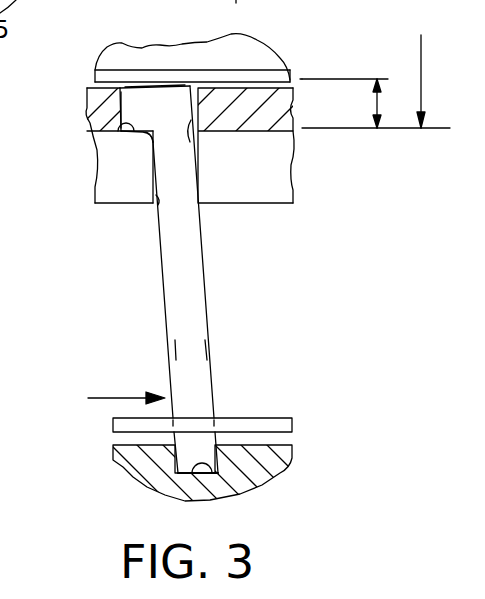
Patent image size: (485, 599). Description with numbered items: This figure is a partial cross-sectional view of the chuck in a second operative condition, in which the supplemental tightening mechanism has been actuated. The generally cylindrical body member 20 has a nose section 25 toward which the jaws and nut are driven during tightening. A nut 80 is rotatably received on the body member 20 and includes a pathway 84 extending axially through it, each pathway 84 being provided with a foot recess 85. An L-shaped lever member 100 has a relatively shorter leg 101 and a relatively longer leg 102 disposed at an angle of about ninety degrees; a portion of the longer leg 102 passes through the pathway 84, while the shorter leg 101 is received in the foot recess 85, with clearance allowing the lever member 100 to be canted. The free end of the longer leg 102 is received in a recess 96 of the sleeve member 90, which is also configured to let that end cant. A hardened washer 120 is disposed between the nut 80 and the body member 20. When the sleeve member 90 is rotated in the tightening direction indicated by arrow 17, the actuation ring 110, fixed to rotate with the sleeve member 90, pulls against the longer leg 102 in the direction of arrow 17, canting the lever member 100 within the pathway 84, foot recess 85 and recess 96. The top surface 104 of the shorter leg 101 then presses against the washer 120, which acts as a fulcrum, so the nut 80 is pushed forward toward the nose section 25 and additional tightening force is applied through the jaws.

The arrow indicating tightening direction 17 is at (115, 398).
The body member 20 is at (263, 44).
The nose section 25 is at (77, 22).
The nut 80 is at (278, 182).
The pathway 84 is at (190, 130).
The foot recess 85 is at (147, 133).
The sleeve member 90 is at (126, 455).
The recess 96 is at (212, 480).
The lever member 100 is at (238, 256).
The shorter leg 101 is at (137, 101).
The longer leg 102 is at (208, 350).
The top surface 104 is at (181, 82).
The actuation ring 110 is at (292, 420).
The washer 120 is at (292, 80).